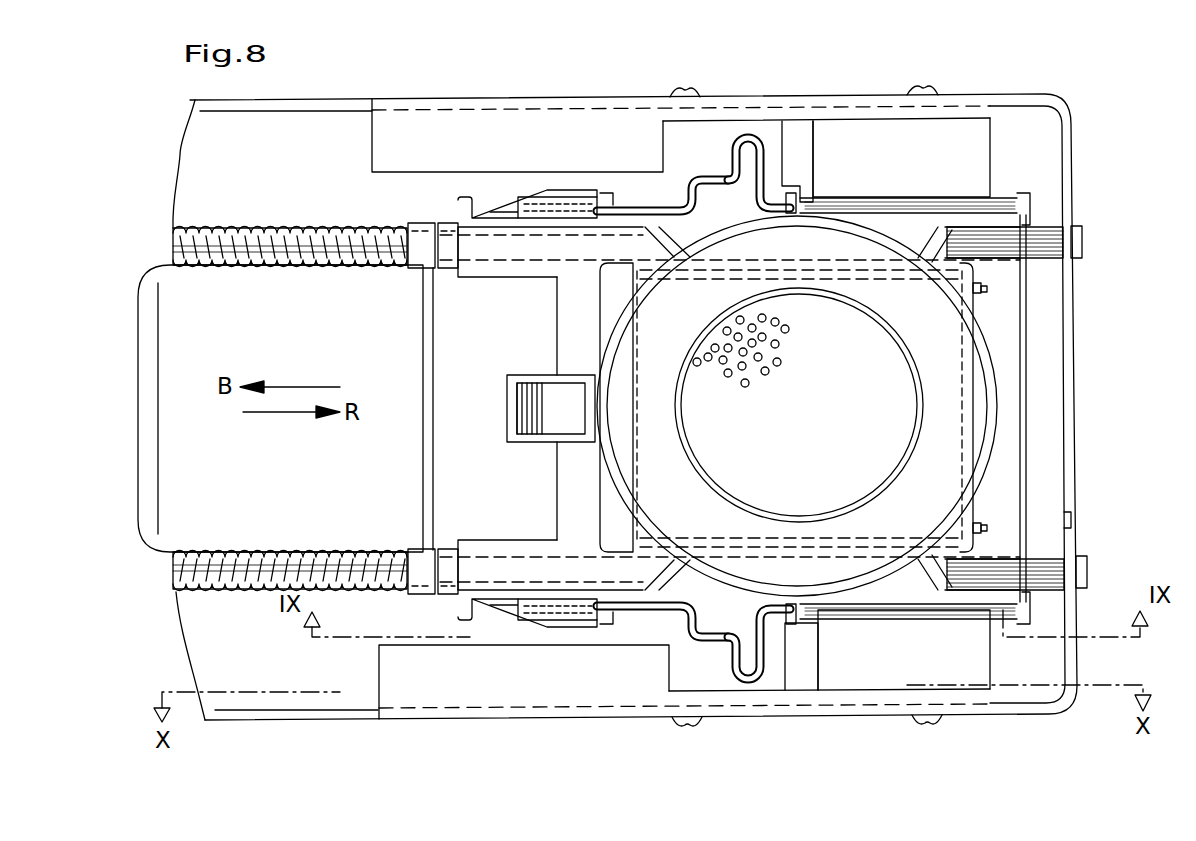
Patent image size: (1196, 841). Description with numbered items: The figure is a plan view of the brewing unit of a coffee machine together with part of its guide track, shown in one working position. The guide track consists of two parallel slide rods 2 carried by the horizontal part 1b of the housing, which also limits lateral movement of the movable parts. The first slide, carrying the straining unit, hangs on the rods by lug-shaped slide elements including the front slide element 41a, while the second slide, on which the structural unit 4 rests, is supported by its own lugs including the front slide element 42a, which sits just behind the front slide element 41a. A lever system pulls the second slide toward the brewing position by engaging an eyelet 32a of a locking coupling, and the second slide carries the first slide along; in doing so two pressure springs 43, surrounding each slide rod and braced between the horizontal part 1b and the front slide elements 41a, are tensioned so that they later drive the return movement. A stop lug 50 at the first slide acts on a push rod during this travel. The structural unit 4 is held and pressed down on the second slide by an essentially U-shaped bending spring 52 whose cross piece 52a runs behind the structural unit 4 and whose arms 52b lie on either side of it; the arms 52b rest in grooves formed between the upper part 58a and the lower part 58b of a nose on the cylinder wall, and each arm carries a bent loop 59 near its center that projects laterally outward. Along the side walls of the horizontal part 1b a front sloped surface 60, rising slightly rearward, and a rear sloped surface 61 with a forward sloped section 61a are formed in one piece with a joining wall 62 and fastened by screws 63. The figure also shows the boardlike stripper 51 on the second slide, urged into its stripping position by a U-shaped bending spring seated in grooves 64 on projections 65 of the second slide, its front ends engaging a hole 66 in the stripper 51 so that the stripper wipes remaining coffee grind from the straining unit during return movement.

The horizontal part 1b is at (1005, 98).
The slide rods 2 is at (192, 268).
The structural unit 4 is at (988, 345).
The eyelet 32a is at (562, 408).
The front slide element 41a is at (412, 248).
The front slide element 42a is at (442, 240).
The pressure springs 43 is at (233, 265).
The stop lug 50 is at (755, 610).
The stripper 51 is at (605, 500).
The bending spring 52 is at (1030, 418).
The cross piece 52a is at (1027, 395).
The arms 52b is at (990, 585).
The upper part of nose 58a is at (778, 198).
The lower part of nose 58b is at (775, 203).
The bent loop 59 is at (770, 200).
The front sloped surface 60 is at (413, 125).
The rear sloped surface 61 is at (886, 150).
The sloped section 61a is at (792, 138).
The joining wall 62 is at (850, 98).
The screws 63 is at (690, 92).
The grooves 64 is at (982, 528).
The projections 65 is at (990, 540).
The hole 66 is at (615, 520).